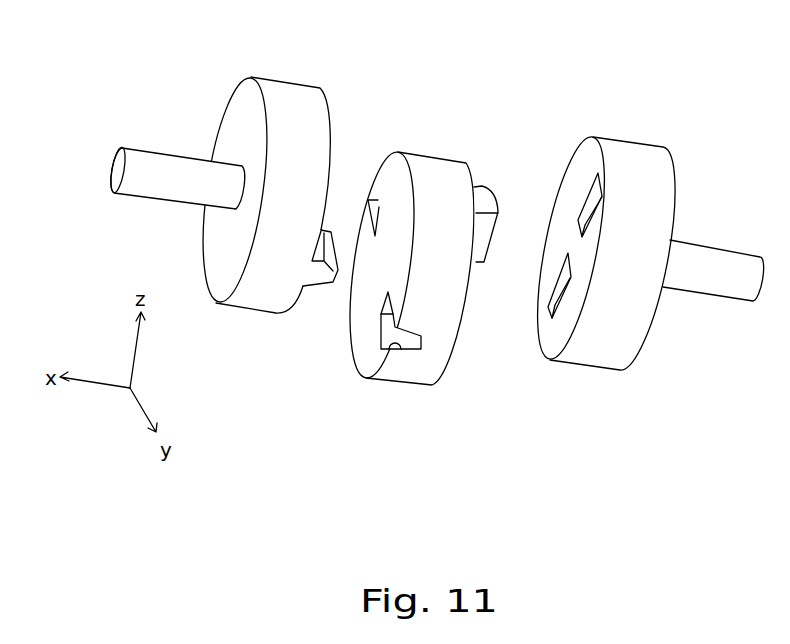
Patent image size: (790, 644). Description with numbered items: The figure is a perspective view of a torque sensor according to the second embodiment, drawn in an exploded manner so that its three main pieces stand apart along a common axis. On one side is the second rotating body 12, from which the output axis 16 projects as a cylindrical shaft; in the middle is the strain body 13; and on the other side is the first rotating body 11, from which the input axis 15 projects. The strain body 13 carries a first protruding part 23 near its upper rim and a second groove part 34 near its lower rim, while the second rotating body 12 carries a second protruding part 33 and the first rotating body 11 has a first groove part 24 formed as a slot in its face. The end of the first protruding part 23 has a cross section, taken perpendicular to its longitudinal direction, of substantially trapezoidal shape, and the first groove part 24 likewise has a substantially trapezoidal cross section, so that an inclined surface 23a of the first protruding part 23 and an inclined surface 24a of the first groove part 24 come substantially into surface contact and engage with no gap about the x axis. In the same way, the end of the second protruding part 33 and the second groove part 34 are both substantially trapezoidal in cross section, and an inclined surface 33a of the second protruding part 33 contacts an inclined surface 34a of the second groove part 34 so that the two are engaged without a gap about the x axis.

The first rotating body 11 is at (607, 353).
The second rotating body 12 is at (247, 90).
The strain body 13 is at (398, 157).
The input axis 15 is at (710, 287).
The output axis 16 is at (153, 160).
The first protruding part 23 is at (482, 182).
The inclined surface 23a is at (488, 190).
The first groove part 24 is at (548, 333).
The inclined surface 24a is at (550, 317).
The second protruding part 33 is at (311, 296).
The inclined surface 33a is at (327, 290).
The second groove part 34 is at (404, 358).
The inclined surface 34a is at (399, 350).